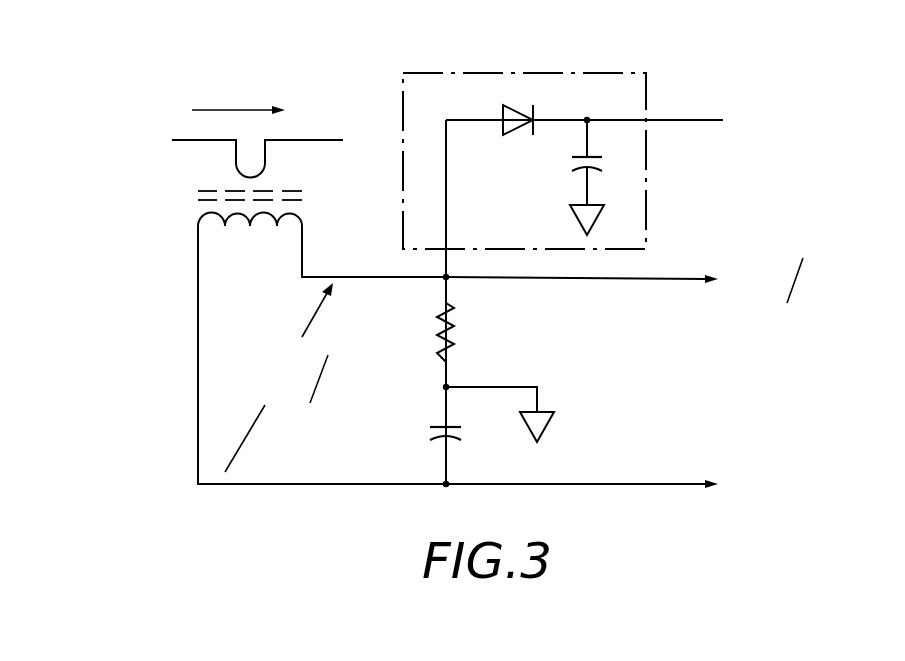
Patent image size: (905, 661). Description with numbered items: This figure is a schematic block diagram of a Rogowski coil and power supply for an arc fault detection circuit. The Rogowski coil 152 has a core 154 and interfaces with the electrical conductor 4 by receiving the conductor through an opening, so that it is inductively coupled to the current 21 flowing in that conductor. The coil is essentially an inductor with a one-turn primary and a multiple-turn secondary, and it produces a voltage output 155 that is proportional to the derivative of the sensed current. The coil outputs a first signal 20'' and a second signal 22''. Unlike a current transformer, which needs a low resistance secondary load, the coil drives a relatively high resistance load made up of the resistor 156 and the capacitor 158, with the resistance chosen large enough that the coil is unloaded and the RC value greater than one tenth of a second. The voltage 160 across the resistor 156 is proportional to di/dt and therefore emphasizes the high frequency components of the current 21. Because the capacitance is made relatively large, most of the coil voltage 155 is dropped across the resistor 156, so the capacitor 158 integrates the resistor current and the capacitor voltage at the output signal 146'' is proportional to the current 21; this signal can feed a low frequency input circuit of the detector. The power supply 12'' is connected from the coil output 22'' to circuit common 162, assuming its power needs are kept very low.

The current 21 is at (208, 110).
The electrical conductor 4 is at (325, 140).
The core 154 is at (178, 192).
The Rogowski coil 152 is at (180, 223).
The second signal 22'' is at (374, 246).
The power supply 12'' is at (584, 139).
The circuit common 162 is at (587, 188).
The voltage output 155 is at (228, 358).
The first signal 20'' is at (292, 355).
The resistor 156 is at (440, 335).
The capacitor 158 is at (430, 430).
The voltage across the resistor 160 is at (582, 282).
The output signal 146'' is at (603, 501).